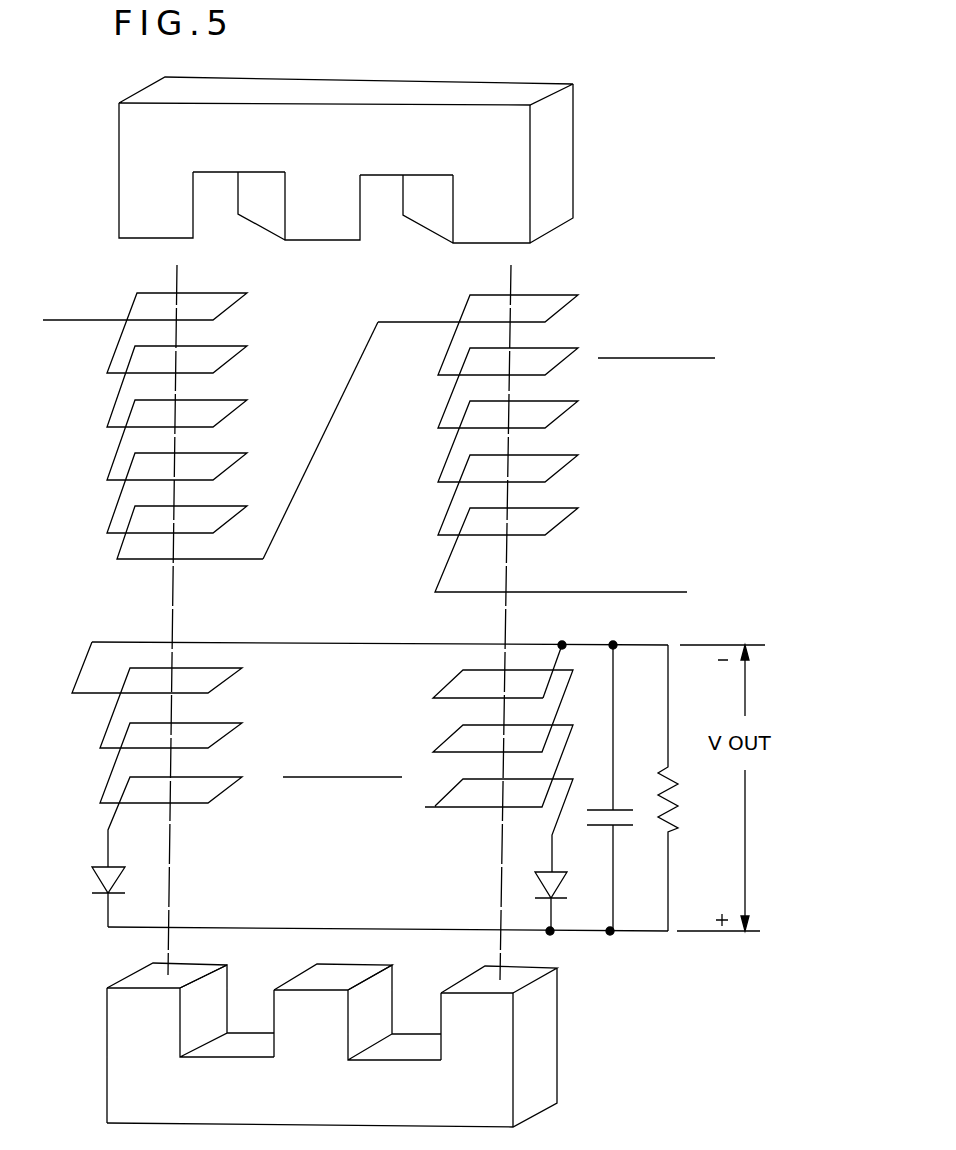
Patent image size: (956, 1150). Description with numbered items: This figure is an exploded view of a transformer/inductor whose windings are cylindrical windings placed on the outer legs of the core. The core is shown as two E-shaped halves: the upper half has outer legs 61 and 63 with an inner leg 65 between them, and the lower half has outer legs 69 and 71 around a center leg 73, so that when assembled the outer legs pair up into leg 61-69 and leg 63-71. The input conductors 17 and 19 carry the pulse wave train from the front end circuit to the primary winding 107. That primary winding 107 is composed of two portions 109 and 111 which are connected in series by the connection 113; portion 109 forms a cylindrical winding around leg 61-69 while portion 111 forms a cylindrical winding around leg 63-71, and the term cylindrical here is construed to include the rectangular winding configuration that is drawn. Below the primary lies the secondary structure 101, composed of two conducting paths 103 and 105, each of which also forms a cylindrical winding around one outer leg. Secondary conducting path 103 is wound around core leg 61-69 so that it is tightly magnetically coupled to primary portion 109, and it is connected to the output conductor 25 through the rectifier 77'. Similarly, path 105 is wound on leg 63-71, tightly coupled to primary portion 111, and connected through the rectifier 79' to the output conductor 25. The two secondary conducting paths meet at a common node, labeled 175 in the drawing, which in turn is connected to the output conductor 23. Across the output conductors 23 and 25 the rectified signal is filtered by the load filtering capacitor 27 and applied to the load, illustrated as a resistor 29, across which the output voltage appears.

The outer leg 61 is at (166, 206).
The inner leg 65 is at (340, 208).
The outer leg 63 is at (493, 209).
The input conductor 17 is at (102, 317).
The primary winding 107 is at (656, 324).
The primary winding portion 109 is at (102, 480).
The connection 113 is at (318, 448).
The primary winding portion 111 is at (577, 460).
The input conductor 19 is at (648, 592).
The secondary structure 101 is at (345, 744).
The secondary conducting path 103 is at (100, 748).
The secondary conducting path 105 is at (445, 804).
The secondary center tap lead 175 is at (567, 641).
The rectifier 77' is at (75, 920).
The rectifier 79' is at (502, 901).
The output conductor 23 is at (657, 645).
The output conductor 25 is at (637, 931).
The load filtering capacitor 27 is at (616, 788).
The load 29 is at (682, 788).
The outer leg 69 is at (152, 1037).
The center leg 73 is at (327, 1040).
The outer leg 71 is at (480, 1041).